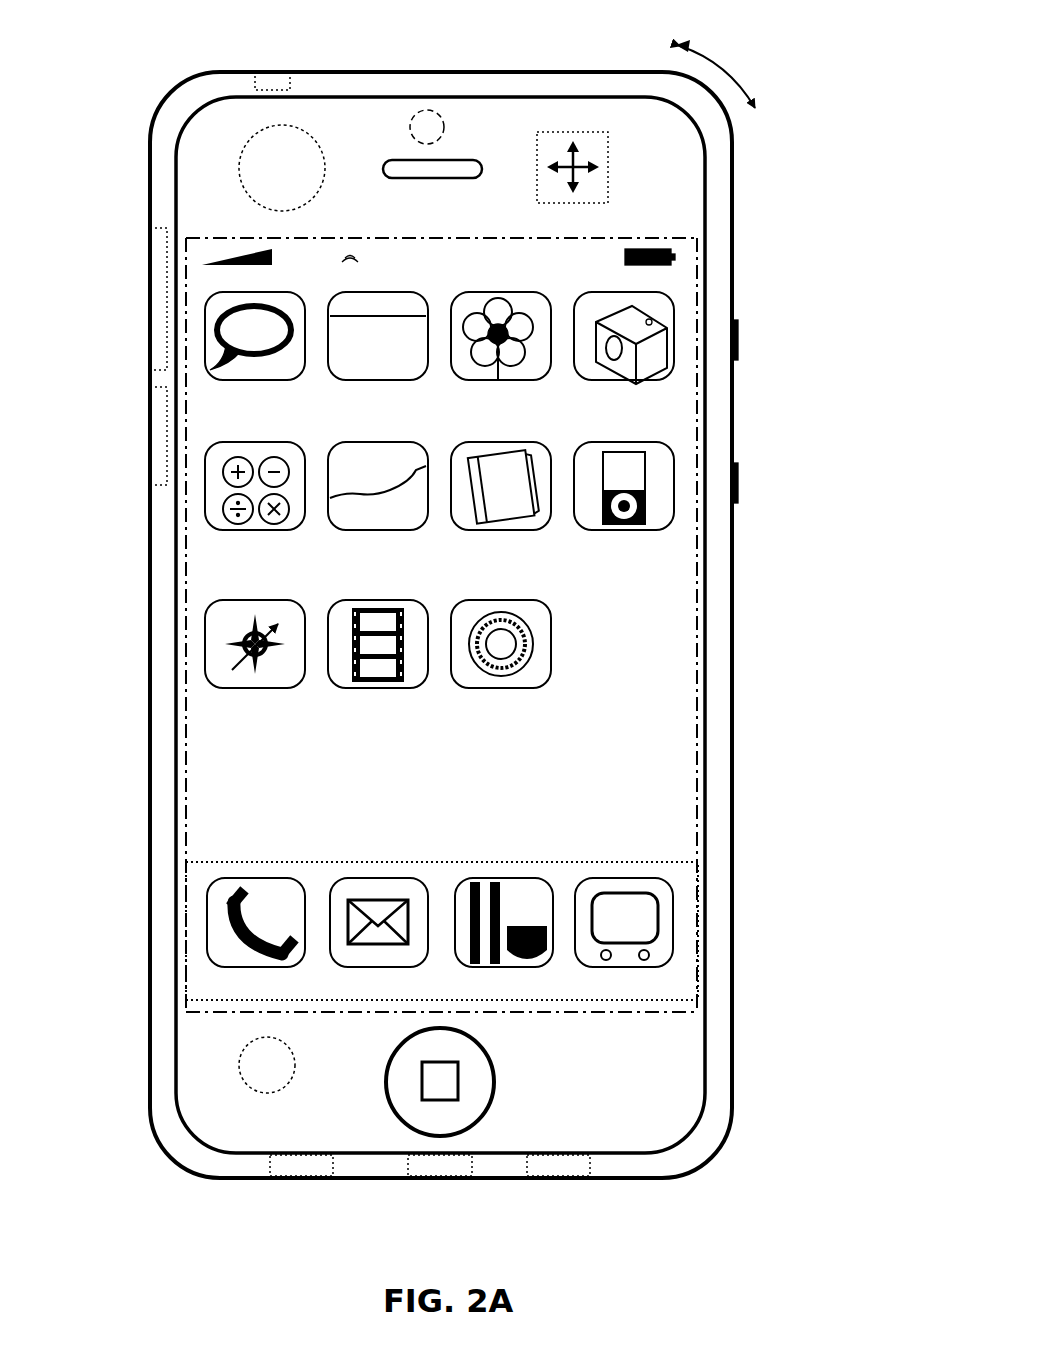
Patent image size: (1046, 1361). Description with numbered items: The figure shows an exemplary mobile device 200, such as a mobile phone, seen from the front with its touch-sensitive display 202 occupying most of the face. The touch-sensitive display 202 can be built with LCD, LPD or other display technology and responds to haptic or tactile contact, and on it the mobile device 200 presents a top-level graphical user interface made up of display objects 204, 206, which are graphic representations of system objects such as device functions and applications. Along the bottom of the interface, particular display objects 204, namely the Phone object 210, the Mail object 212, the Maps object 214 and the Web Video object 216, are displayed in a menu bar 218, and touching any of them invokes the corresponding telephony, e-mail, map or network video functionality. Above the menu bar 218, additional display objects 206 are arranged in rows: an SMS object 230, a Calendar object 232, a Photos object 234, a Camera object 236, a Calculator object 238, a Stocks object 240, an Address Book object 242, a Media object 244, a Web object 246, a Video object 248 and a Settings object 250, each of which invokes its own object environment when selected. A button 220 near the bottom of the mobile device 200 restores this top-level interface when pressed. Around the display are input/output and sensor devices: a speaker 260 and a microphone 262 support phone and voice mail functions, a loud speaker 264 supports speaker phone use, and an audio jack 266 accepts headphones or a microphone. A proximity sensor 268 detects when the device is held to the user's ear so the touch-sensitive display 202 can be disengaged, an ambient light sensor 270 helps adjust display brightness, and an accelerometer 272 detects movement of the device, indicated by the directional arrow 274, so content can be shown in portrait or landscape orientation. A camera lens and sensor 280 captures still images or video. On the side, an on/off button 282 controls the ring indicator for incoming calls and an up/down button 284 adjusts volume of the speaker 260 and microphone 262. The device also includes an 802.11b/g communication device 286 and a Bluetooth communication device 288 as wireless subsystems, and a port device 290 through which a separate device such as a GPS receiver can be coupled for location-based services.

The mobile device 200 is at (523, 72).
The touch-sensitive display 202 is at (633, 238).
The display objects 204 is at (686, 876).
The display objects 206 is at (684, 284).
The Phone object 210 is at (256, 878).
The Mail object 212 is at (379, 878).
The Maps object 214 is at (518, 878).
The Web Video object 216 is at (626, 878).
The menu bar 218 is at (590, 1012).
The button 220 is at (495, 1080).
The SMS object 230 is at (296, 380).
The Calendar object 232 is at (418, 380).
The Photos object 234 is at (536, 380).
The Camera object 236 is at (672, 376).
The Calculator object 238 is at (298, 530).
The Stocks object 240 is at (420, 530).
The Address Book object 242 is at (544, 530).
The Media object 244 is at (672, 526).
The Web object 246 is at (296, 688).
The Video object 248 is at (420, 688).
The Settings object 250 is at (545, 688).
The speaker 260 is at (416, 178).
The microphone 262 is at (335, 1178).
The loud speaker 264 is at (590, 1178).
The audio jack 266 is at (272, 80).
The proximity sensor 268 is at (318, 182).
The ambient light sensor 270 is at (288, 1088).
The accelerometer 272 is at (608, 170).
The directional arrow 274 is at (744, 80).
The camera lens and sensor 280 is at (446, 124).
The on/off button 282 is at (740, 340).
The up/down button 284 is at (740, 483).
The 802.11b/g communication device 286 is at (152, 232).
The Bluetooth communication device 288 is at (152, 388).
The port device 290 is at (472, 1178).